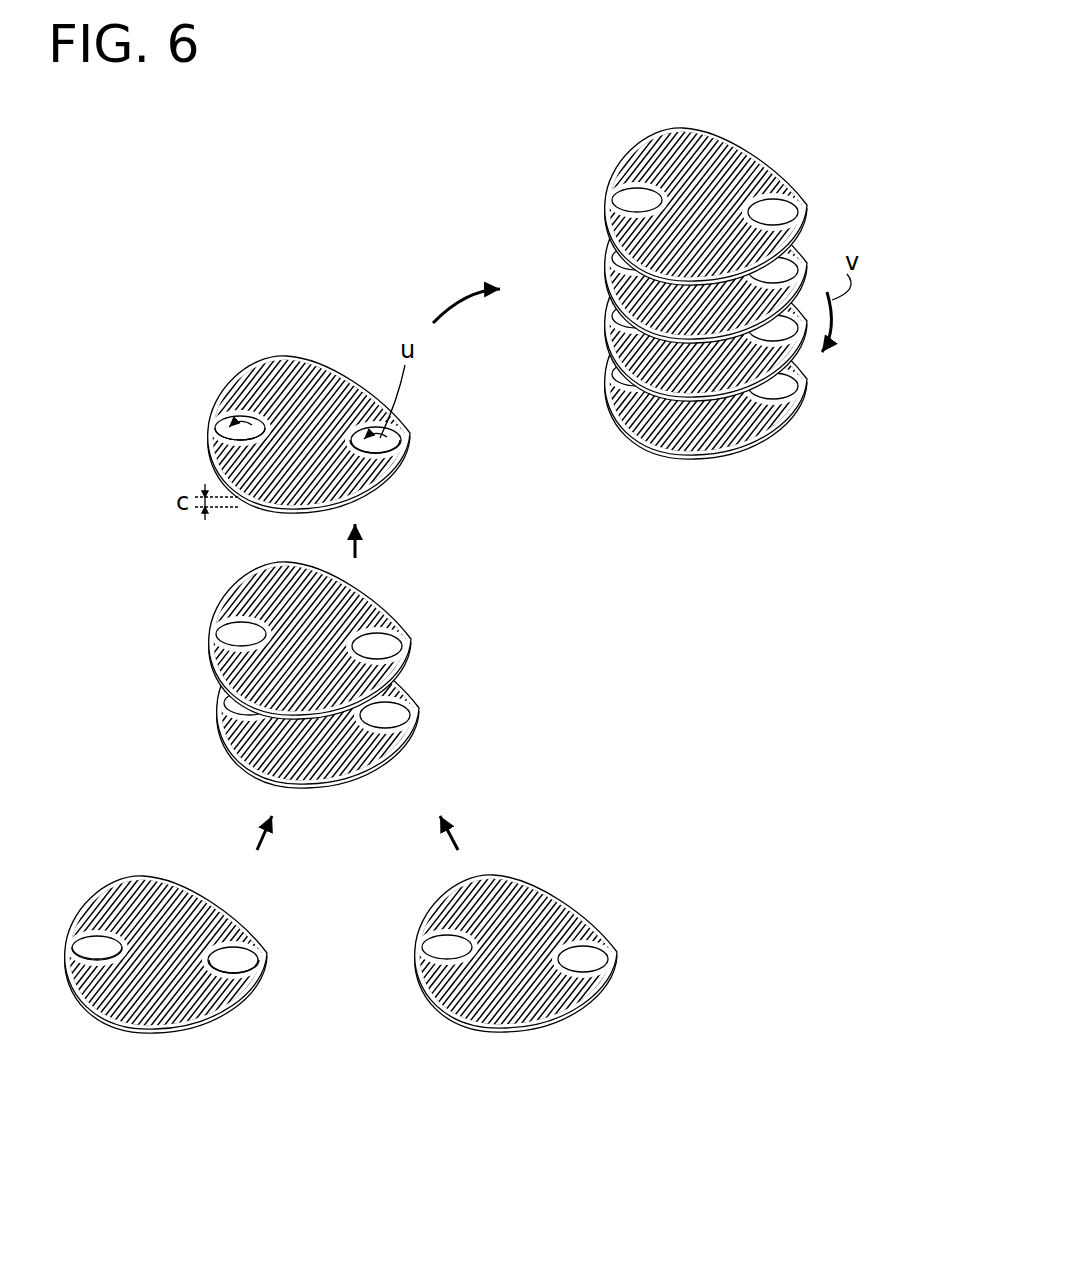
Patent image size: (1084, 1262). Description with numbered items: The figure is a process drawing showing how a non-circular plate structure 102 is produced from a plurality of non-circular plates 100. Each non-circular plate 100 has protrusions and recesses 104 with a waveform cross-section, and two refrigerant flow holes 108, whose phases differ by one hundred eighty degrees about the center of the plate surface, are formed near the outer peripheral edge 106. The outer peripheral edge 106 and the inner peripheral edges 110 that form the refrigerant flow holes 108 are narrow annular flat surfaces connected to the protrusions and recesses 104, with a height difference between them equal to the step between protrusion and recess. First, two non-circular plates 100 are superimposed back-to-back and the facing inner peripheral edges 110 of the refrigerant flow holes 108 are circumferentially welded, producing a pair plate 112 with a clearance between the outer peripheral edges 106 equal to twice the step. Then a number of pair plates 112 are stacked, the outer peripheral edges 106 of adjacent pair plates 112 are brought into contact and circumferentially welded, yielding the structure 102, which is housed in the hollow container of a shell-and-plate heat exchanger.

The non-circular plate 100 is at (339, 795).
The non-circular plate structure 102 is at (858, 152).
The protrusions and recesses 104 is at (175, 905).
The outer peripheral edge 106 is at (160, 1031).
The refrigerant flow hole 108 is at (92, 940).
The inner peripheral edge 110 is at (97, 960).
The pair plate 112 is at (317, 351).